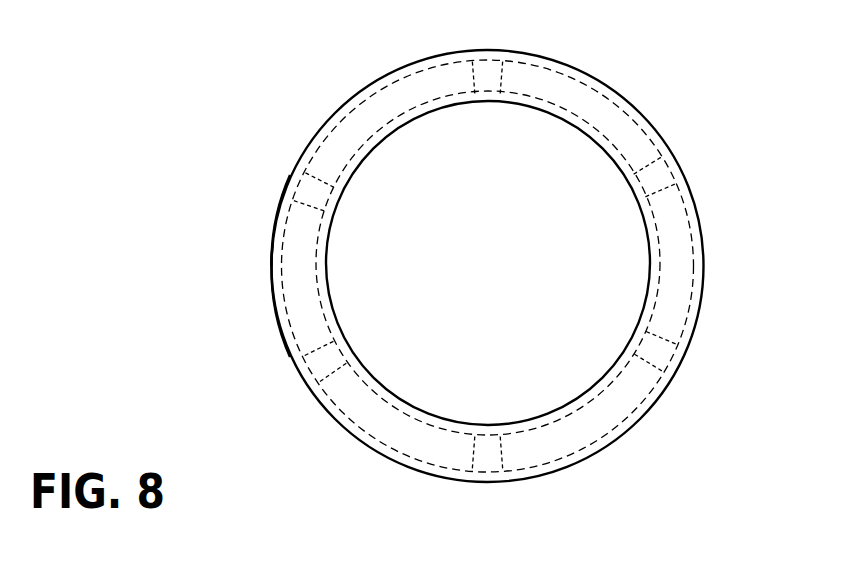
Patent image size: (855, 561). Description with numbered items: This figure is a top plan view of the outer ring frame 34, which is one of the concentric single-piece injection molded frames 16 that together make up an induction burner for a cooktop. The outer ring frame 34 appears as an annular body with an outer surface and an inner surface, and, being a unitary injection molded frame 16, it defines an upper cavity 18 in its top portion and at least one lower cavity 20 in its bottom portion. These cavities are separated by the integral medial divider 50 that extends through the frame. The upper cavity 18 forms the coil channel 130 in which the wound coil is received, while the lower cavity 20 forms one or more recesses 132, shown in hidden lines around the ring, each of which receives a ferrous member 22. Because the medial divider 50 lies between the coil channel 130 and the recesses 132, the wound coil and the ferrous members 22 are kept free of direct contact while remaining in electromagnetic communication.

The injection molded frame 16 is at (249, 252).
The upper cavity 18 is at (629, 144).
The lower cavity 20 is at (373, 123).
The ferrous member 22 is at (567, 95).
The outer ring frame 34 is at (694, 193).
The medial divider 50 is at (678, 252).
The coil channel 130 is at (298, 310).
The recess 132 is at (295, 233).